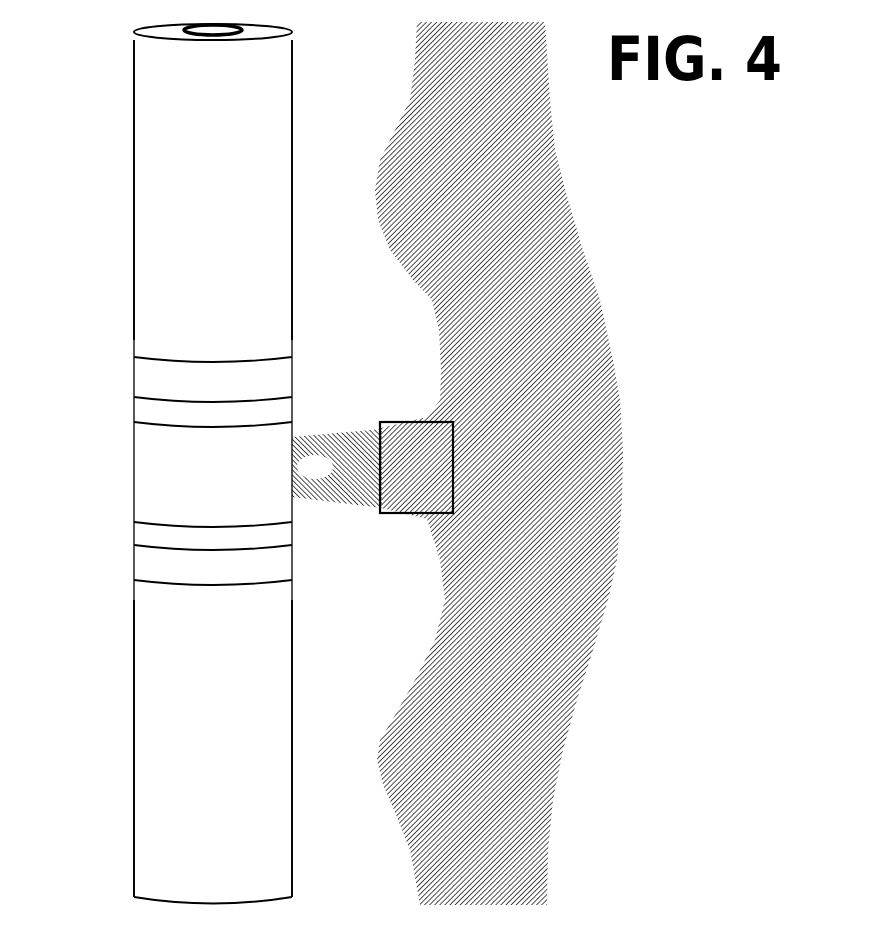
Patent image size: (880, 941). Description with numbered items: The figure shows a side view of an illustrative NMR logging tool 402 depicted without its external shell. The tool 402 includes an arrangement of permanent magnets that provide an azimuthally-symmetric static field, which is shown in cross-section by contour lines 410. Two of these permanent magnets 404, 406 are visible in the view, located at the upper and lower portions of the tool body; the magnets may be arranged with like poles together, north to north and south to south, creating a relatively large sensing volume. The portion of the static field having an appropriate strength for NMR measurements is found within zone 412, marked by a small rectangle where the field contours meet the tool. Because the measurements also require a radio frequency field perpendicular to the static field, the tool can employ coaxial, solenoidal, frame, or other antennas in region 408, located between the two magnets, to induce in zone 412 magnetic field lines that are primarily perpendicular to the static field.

The NMR logging tool 402 is at (105, 82).
The permanent magnet 404 is at (287, 100).
The permanent magnet 406 is at (287, 833).
The antenna region 408 is at (122, 344).
The contour lines 410 is at (590, 200).
The zone 412 is at (383, 421).